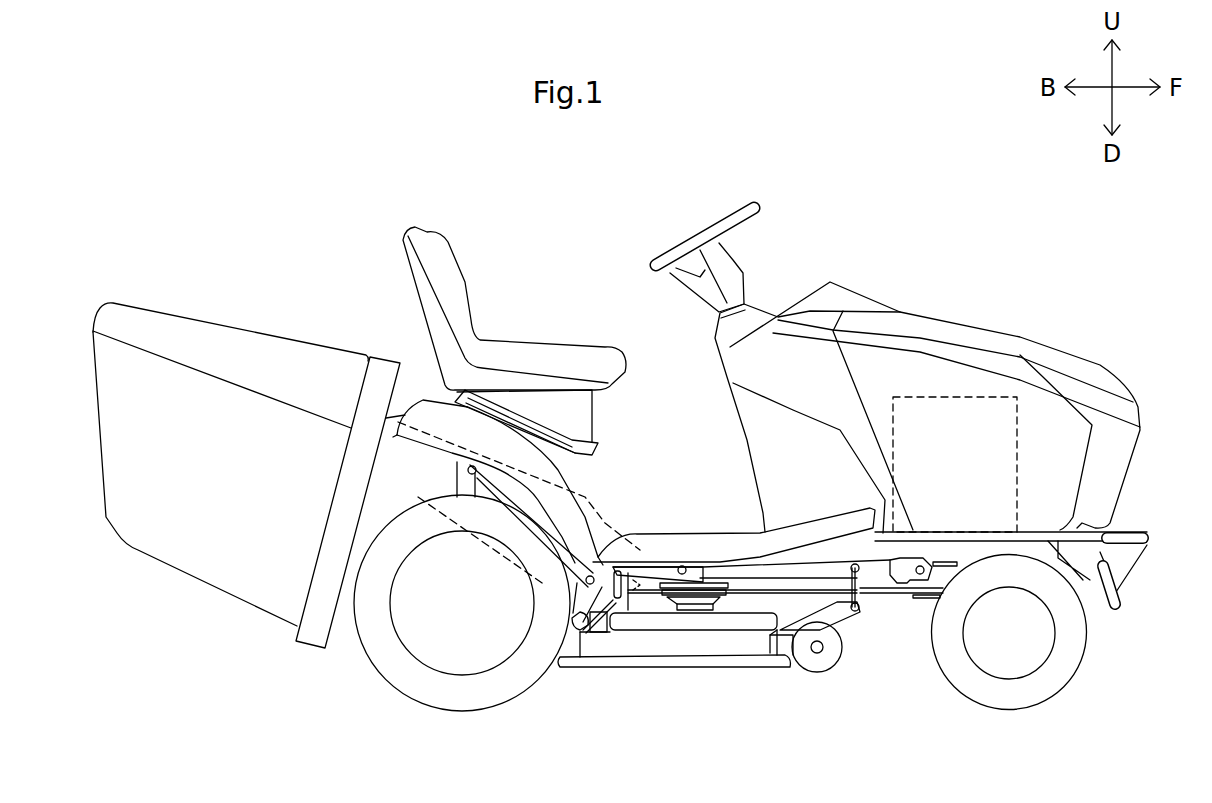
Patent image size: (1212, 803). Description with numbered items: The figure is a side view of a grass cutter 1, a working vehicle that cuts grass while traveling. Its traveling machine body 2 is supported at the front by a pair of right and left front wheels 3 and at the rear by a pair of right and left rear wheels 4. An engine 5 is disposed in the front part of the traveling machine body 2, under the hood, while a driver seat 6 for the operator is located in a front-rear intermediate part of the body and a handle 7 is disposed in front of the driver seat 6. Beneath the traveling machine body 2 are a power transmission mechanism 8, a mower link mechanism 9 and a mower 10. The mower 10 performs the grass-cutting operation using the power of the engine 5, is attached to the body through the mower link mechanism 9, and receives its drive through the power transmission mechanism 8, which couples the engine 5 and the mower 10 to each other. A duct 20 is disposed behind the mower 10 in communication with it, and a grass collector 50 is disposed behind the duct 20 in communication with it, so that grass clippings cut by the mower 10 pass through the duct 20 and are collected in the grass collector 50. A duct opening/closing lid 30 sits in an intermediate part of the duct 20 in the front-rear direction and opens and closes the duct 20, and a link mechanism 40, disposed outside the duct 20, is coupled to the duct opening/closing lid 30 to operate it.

The grass cutter 1 is at (230, 173).
The traveling machine body 2 is at (1100, 552).
The front wheels 3 is at (1057, 673).
The rear wheels 4 is at (393, 662).
The engine 5 is at (983, 395).
The driver seat 6 is at (447, 263).
The handle 7 is at (682, 237).
The power transmission mechanism 8 is at (767, 592).
The mower link mechanism 9 is at (840, 617).
The mower 10 is at (688, 650).
The duct 20 is at (393, 453).
The duct opening/closing lid 30 is at (645, 573).
The link mechanism 40 is at (600, 630).
The grass collector 50 is at (195, 577).